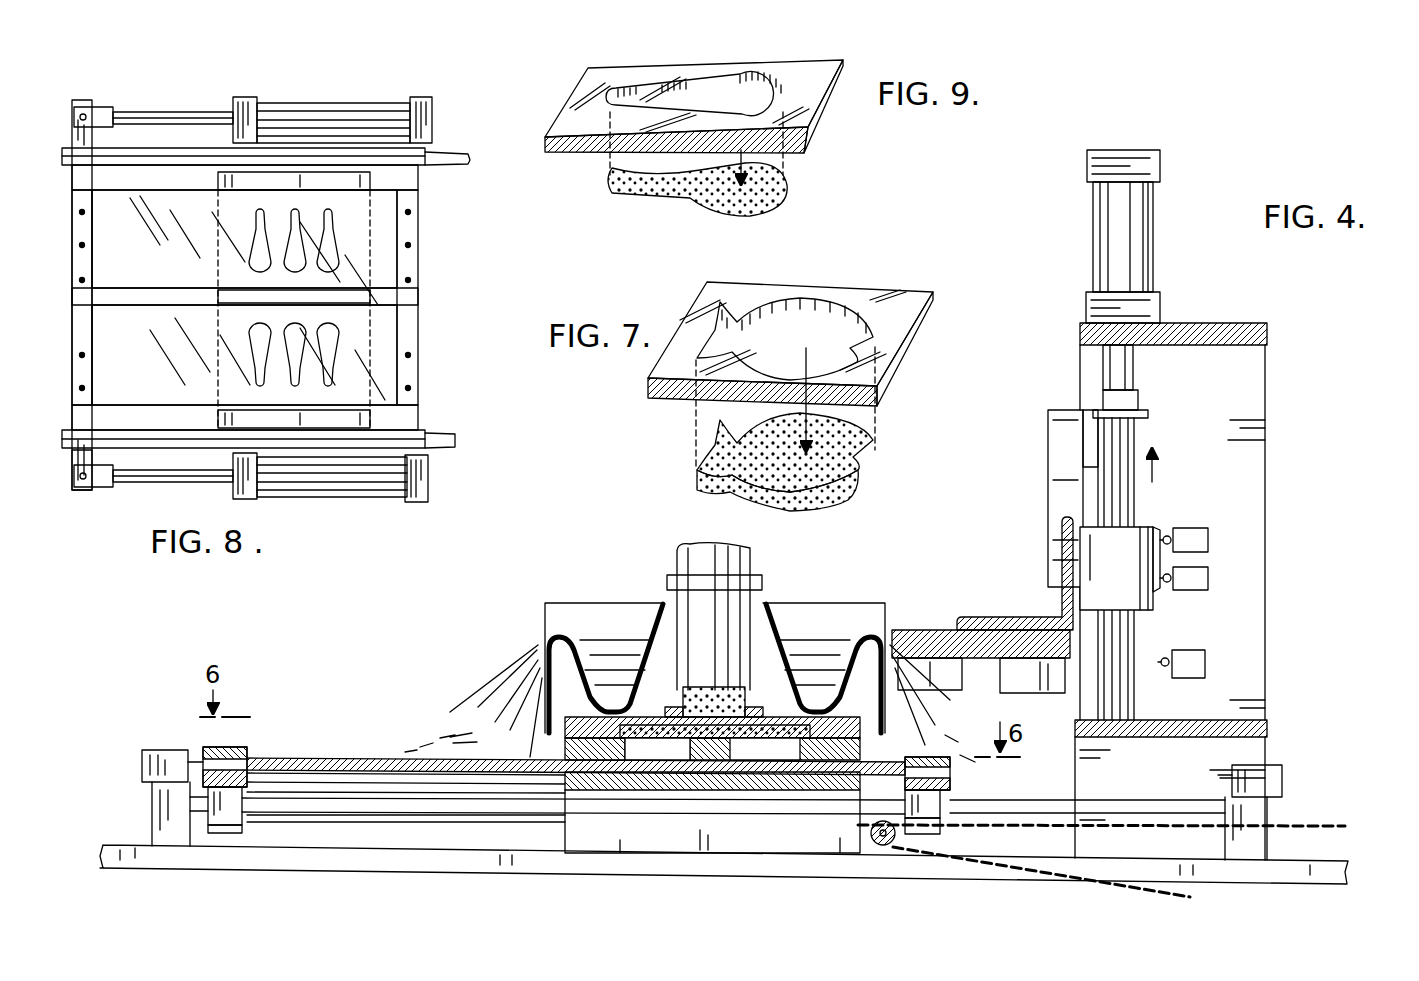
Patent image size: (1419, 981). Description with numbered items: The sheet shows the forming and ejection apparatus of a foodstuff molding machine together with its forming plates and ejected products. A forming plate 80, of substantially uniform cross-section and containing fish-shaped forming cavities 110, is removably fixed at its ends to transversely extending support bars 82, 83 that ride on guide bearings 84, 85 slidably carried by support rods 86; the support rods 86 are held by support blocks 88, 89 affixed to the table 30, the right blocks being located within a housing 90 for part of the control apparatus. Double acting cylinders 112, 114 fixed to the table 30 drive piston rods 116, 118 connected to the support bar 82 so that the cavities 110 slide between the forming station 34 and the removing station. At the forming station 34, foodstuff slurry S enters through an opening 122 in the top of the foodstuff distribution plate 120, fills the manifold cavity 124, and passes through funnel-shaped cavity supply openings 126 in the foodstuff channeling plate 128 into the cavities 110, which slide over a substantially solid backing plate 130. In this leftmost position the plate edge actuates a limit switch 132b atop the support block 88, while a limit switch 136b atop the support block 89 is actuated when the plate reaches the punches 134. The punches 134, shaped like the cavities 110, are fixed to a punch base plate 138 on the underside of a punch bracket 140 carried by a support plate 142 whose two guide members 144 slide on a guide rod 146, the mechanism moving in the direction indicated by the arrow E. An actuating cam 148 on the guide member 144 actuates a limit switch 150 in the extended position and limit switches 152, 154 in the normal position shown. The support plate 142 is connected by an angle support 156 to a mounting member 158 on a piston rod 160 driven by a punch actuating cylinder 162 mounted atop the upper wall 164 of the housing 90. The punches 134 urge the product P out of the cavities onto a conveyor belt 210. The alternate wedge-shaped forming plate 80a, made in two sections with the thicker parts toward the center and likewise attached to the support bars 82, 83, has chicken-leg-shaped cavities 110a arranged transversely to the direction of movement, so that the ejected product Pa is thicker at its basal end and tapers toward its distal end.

In FIG. 4, the table 30 is at (433, 868).
In FIG. 8, the forming station 34 is at (412, 80).
In FIG. 7, the forming plate 80 is at (905, 300).
In FIG. 4, the forming plate 80 is at (328, 758).
In FIG. 8, the wedge-shaped forming plate 80a is at (384, 262).
In FIG. 9, the wedge-shaped forming plate 80a is at (808, 108).
In FIG. 8, the support bar 82 is at (74, 460).
In FIG. 4, the support bar 82 is at (262, 765).
In FIG. 8, the support bar 83 is at (414, 427).
In FIG. 4, the support bar 83 is at (953, 787).
In FIG. 4, the guide bearing 84 is at (230, 810).
In FIG. 4, the guide bearing 85 is at (905, 845).
In FIG. 8, the support rods 86 is at (455, 160).
In FIG. 4, the support rods 86 is at (372, 810).
In FIG. 4, the support block 88 is at (165, 818).
In FIG. 4, the support block 89 is at (1247, 845).
In FIG. 4, the housing 90 is at (1258, 380).
In FIG. 7, the forming cavities 110 is at (822, 305).
In FIG. 4, the forming cavities 110 is at (790, 780).
In FIG. 8, the forming cavity 110a is at (257, 233).
In FIG. 9, the forming cavity 110a is at (772, 85).
In FIG. 8, the double acting cylinder 112 is at (376, 494).
In FIG. 8, the double acting cylinder 114 is at (338, 103).
In FIG. 8, the piston rod 116 is at (188, 485).
In FIG. 8, the piston rod 118 is at (198, 113).
In FIG. 4, the piston rod 118 is at (372, 772).
In FIG. 4, the foodstuff distribution plate 120 is at (580, 725).
In FIG. 4, the opening 122 is at (708, 690).
In FIG. 4, the foodstuff distribution manifold cavity 124 is at (640, 735).
In FIG. 4, the cavity supply openings 126 is at (775, 776).
In FIG. 4, the foodstuff channeling plate 128 is at (580, 785).
In FIG. 4, the backing plate 130 is at (635, 790).
In FIG. 4, the limit switch 132b is at (155, 750).
In FIG. 4, the punches 134 is at (1010, 688).
In FIG. 4, the limit switch 136b is at (1275, 768).
In FIG. 4, the punch base plate 138 is at (975, 640).
In FIG. 4, the punch bracket 140 is at (1028, 600).
In FIG. 4, the support plate 142 is at (1055, 440).
In FIG. 4, the guide members 144 is at (1138, 605).
In FIG. 4, the guide rod 146 is at (1123, 699).
In FIG. 4, the actuating cam 148 is at (1158, 540).
In FIG. 4, the limit switch 150 is at (1196, 660).
In FIG. 4, the limit switch 152 is at (1199, 582).
In FIG. 4, the limit switch 154 is at (1193, 538).
In FIG. 4, the angle support 156 is at (1148, 413).
In FIG. 4, the mounting member 158 is at (1138, 392).
In FIG. 4, the piston rod 160 is at (1118, 360).
In FIG. 4, the punch actuating cylinder 162 is at (1100, 219).
In FIG. 4, the upper wall 164 is at (1255, 323).
In FIG. 4, the conveyor belt 210 is at (1320, 825).
In FIG. 4, the direction of movement E is at (1153, 468).
In FIG. 7, the product P is at (872, 470).
In FIG. 9, the wedge-shaped product Pa is at (786, 201).
In FIG. 4, the foodstuff slurry S is at (732, 710).